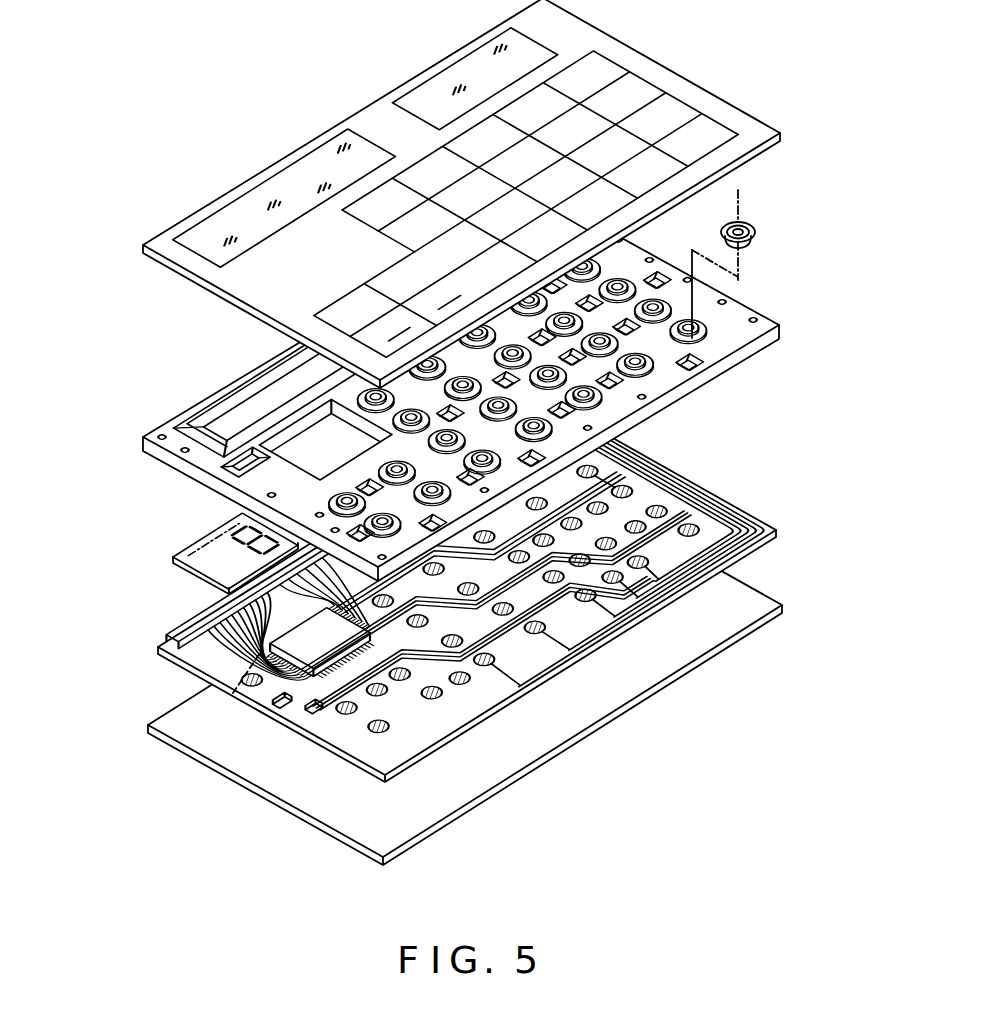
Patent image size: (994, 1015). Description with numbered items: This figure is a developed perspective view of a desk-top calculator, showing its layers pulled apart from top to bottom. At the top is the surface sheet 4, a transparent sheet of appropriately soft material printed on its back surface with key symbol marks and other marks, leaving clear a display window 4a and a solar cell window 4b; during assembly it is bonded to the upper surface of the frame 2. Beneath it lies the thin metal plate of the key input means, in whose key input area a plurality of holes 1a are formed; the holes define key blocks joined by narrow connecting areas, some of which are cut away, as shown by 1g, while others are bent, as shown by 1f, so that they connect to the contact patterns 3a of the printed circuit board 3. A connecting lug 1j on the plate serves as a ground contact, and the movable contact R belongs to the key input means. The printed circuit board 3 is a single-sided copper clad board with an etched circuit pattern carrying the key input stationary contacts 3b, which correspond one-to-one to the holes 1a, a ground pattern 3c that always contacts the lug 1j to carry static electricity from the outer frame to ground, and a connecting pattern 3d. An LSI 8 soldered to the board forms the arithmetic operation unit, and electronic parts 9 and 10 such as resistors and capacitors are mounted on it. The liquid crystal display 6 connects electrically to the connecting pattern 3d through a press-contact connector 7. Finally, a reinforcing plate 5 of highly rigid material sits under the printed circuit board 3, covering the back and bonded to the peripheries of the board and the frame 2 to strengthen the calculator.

The holes 1a is at (703, 337).
The bent connecting area 1f is at (645, 362).
The cut-away connecting area 1g is at (697, 366).
The connecting lug 1j is at (238, 470).
The frame 2 is at (745, 303).
The printed circuit board 3 is at (730, 498).
The contact patterns 3a is at (592, 603).
The key input stationary contacts 3b is at (697, 530).
The ground pattern 3c is at (233, 693).
The connecting pattern 3d is at (197, 650).
The surface sheet 4 is at (657, 60).
The display window 4a is at (272, 192).
The solar cell window 4b is at (456, 80).
The reinforcing plate 5 is at (450, 800).
The liquid crystal display 6 is at (185, 552).
The press-contact connector 7 is at (178, 632).
The LSI 8 is at (312, 660).
The electronic part 9 is at (277, 693).
The electronic part 10 is at (312, 710).
The movable contact R is at (752, 235).